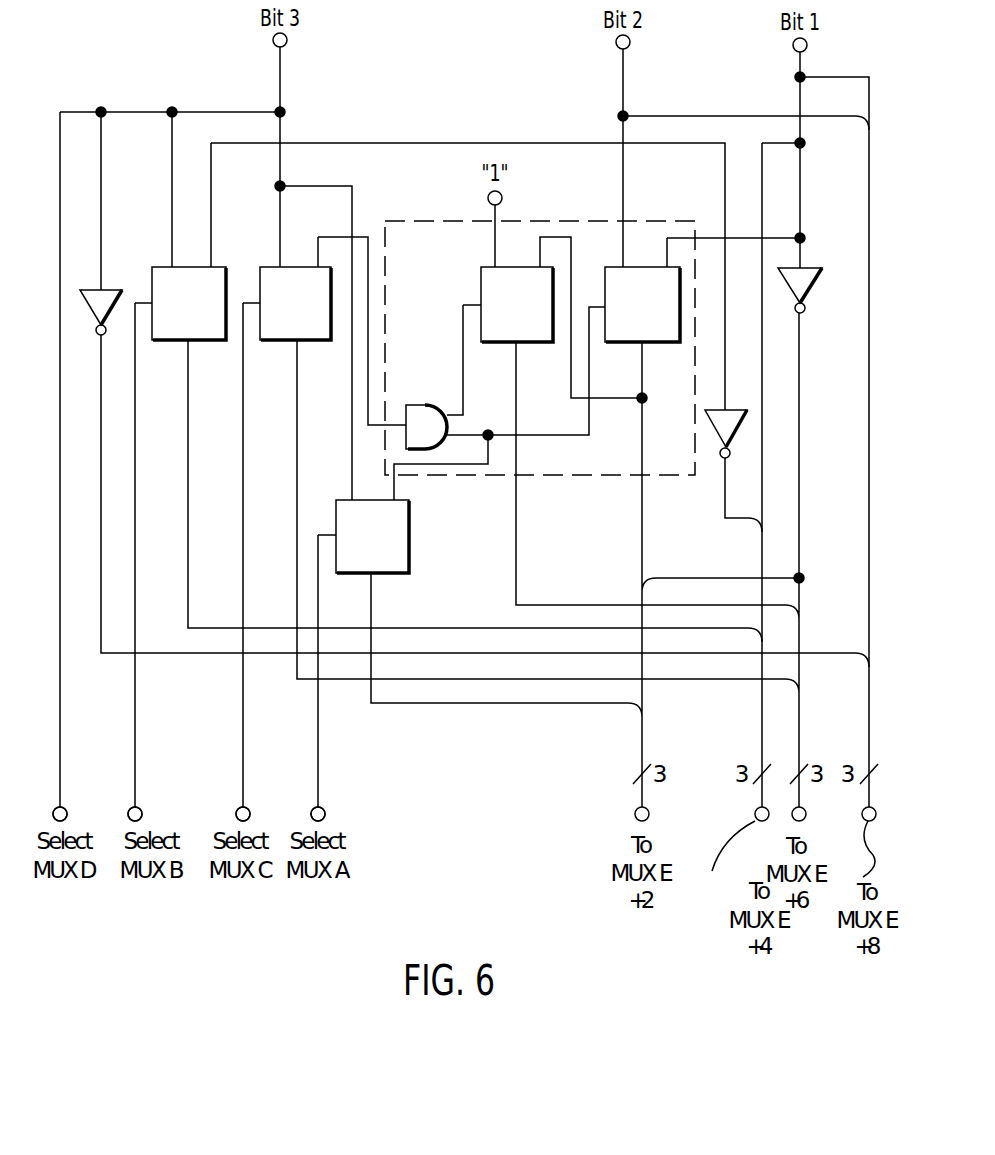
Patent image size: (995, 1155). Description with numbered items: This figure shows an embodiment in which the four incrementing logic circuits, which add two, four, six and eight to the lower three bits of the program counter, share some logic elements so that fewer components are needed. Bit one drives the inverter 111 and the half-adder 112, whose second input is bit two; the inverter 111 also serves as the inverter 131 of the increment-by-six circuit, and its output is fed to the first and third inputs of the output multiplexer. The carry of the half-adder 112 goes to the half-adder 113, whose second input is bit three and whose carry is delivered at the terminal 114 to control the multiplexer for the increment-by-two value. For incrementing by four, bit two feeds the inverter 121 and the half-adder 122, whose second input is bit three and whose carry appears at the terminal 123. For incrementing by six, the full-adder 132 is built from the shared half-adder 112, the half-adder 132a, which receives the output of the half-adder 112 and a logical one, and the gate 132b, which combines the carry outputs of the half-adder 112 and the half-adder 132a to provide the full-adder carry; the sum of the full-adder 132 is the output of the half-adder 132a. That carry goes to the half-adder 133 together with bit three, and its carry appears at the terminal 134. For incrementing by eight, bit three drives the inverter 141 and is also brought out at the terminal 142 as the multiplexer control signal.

The inverter 111 is at (821, 264).
The half-adder 112 is at (660, 345).
The second half-adder 113 is at (411, 537).
The terminal 114 is at (311, 812).
The inverter 121 is at (737, 409).
The half-adder 122 is at (165, 343).
The terminal 123 is at (153, 822).
The inverter 131 is at (822, 297).
The full-adder 132 is at (546, 220).
The half-adder 132a is at (535, 345).
The OR gate 132b is at (429, 404).
The half-adder 133 is at (276, 343).
The terminal 134 is at (236, 812).
The inverter 141 is at (113, 282).
The terminal 142 is at (64, 804).